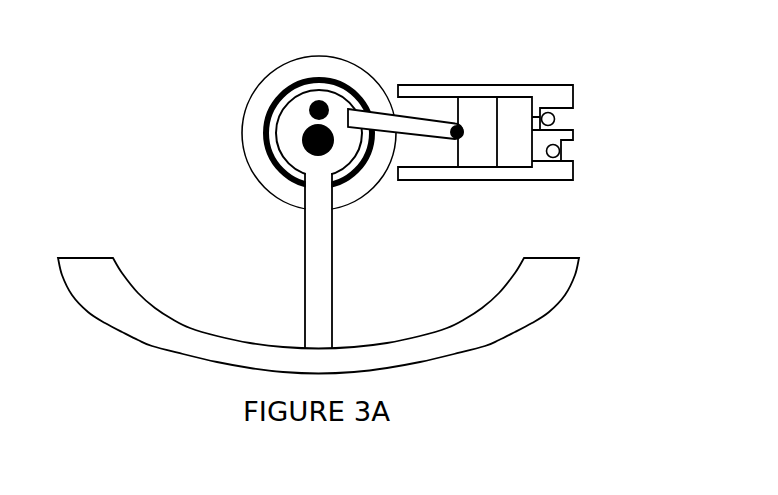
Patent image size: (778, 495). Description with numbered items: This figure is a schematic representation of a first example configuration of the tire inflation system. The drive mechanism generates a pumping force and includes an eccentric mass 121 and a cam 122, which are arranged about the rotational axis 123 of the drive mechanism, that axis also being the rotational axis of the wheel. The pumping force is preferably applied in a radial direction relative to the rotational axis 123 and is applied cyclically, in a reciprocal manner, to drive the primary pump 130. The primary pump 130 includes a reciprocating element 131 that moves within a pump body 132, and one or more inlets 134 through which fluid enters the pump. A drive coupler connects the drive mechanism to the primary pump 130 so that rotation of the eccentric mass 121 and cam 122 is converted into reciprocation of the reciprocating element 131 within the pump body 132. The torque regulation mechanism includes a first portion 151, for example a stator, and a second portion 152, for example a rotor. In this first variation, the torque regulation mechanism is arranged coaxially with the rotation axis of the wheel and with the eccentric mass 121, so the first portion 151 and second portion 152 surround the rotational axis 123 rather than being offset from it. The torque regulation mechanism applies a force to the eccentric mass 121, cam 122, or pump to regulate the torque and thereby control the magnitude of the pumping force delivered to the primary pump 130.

The eccentric mass 121 is at (505, 323).
The cam 122 is at (298, 103).
The rotational axis 123 is at (327, 147).
The primary pump 130 is at (527, 126).
The reciprocating element 131 is at (480, 108).
The pump body 132 is at (520, 177).
The inlets 134 is at (578, 152).
The first portion 151 is at (272, 122).
The second portion 152 is at (288, 188).